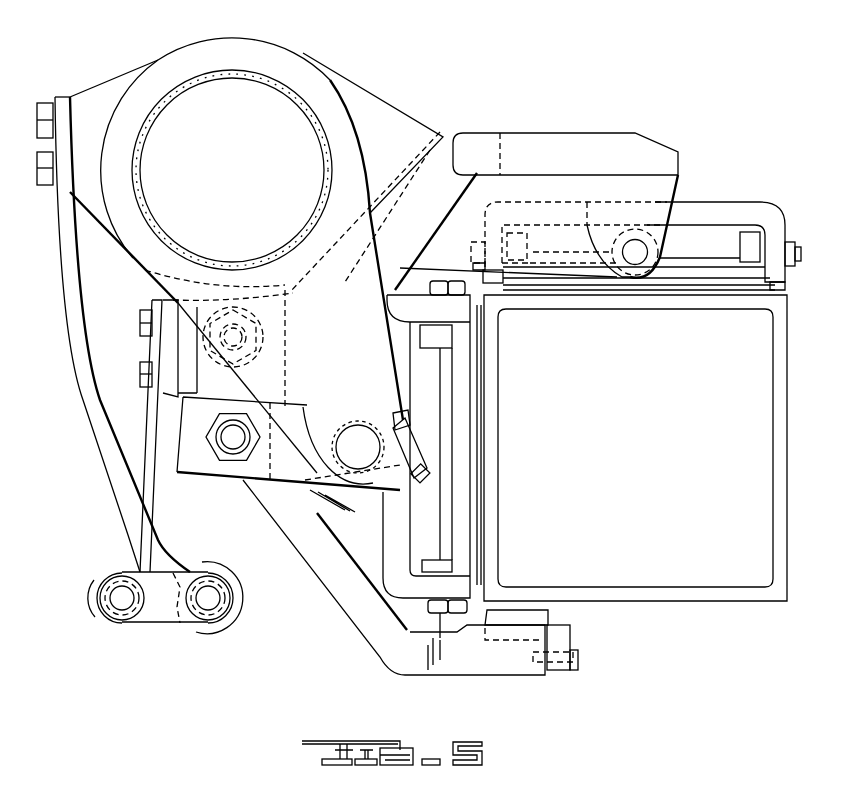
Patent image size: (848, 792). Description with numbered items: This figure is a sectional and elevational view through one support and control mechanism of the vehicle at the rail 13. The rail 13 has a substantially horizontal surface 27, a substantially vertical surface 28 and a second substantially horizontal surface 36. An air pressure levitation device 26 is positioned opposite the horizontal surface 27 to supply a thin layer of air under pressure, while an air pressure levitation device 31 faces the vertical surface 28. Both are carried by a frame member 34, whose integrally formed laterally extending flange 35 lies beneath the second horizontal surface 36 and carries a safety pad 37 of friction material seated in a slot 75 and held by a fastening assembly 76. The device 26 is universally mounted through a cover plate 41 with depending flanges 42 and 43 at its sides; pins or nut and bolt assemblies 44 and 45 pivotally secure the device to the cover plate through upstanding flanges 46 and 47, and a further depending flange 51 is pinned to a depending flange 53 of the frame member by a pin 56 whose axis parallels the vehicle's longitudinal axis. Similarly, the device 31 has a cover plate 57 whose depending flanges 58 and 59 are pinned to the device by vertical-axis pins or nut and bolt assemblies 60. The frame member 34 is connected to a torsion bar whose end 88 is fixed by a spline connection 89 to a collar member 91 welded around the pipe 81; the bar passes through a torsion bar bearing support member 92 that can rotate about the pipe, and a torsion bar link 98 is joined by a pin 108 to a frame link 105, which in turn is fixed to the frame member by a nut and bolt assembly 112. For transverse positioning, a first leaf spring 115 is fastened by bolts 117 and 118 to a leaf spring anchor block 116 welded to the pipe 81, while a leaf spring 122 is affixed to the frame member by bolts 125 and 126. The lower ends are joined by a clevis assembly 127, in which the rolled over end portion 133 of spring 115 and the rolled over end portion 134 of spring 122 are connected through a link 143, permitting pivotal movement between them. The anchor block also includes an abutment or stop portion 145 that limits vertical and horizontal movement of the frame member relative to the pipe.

The rail 13 is at (717, 602).
The air pressure levitation device 26 is at (698, 277).
The substantially horizontal surface 27 is at (583, 300).
The substantially vertical surface 28 is at (485, 475).
The air pressure levitation device 31 is at (470, 445).
The frame member 34 is at (293, 550).
The laterally extending flange 35 is at (510, 663).
The second substantially horizontal surface 36 is at (637, 600).
The safety pad 37 is at (540, 620).
The cover plate 41 is at (737, 212).
The depending flange 42 is at (495, 278).
The depending flange 43 is at (768, 285).
The pin or nut and bolt assembly 44 is at (478, 240).
The pin or nut and bolt assembly 45 is at (793, 240).
The upstanding flange 46 is at (518, 240).
The upstanding flange 47 is at (742, 245).
The depending flange 51 is at (668, 233).
The depending flange 53 is at (470, 195).
The pin 56 is at (637, 263).
The cover plate 57 is at (357, 600).
The depending flange 58 is at (400, 575).
The depending flange 59 is at (405, 305).
The pin or nut and bolt assembly 60 is at (443, 292).
The slot 75 is at (503, 645).
The fastening assembly 76 is at (572, 672).
The pipe 81 is at (267, 90).
The end of the torsion bar 88 is at (358, 447).
The spline connection 89 is at (340, 430).
The collar member 91 is at (350, 143).
The torsion bar bearing support member 92 is at (293, 485).
The torsion bar link 98 is at (230, 477).
The frame link 105 is at (283, 292).
The pin 108 is at (233, 437).
The nut and bolt assembly 112 is at (220, 288).
The first leaf spring 115 is at (72, 292).
The leaf spring anchor block 116 is at (117, 73).
The bolt 117 is at (43, 103).
The bolt 118 is at (42, 172).
The third leaf spring 122 is at (153, 440).
The bolt 125 is at (143, 323).
The bolt 126 is at (142, 378).
The clevis assembly 127 is at (95, 615).
The rolled over end portion 133 is at (228, 628).
The rolled over end portion 134 is at (118, 625).
The link 143 is at (172, 624).
The abutment or stop portion 145 is at (435, 135).